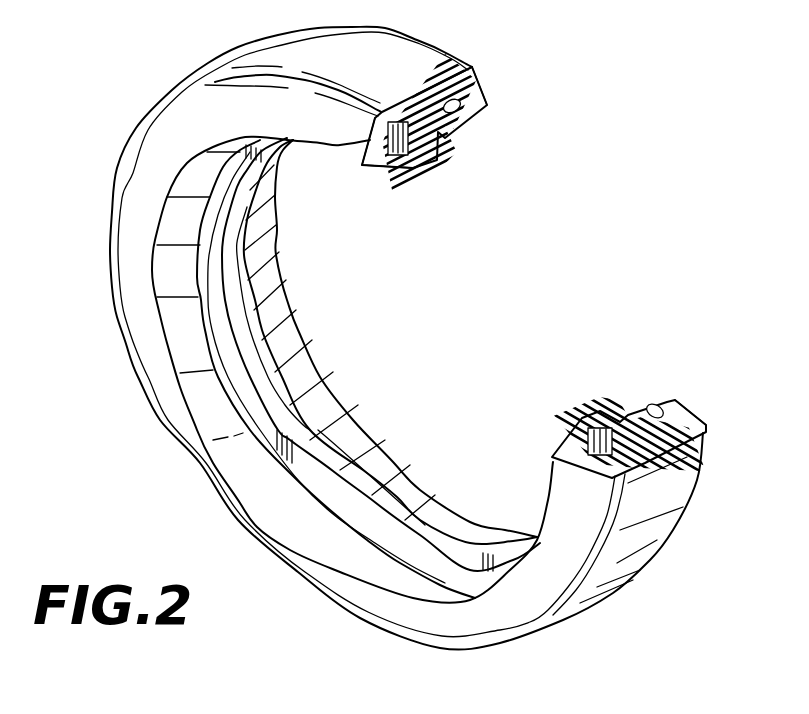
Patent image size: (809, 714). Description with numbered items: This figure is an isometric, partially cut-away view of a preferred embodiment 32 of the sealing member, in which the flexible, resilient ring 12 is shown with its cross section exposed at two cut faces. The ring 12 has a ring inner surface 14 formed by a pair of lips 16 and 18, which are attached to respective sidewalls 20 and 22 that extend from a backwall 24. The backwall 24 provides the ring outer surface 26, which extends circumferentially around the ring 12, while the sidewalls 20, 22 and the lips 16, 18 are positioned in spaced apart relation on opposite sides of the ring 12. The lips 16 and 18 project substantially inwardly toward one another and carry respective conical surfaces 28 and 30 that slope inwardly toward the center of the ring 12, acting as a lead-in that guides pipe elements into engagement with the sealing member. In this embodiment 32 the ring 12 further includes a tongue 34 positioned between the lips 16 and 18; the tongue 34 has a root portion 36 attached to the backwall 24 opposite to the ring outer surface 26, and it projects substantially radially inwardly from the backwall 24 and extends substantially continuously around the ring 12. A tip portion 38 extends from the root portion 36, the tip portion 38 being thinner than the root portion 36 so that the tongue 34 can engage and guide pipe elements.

The ring 12 is at (657, 537).
The ring inner surface 14 is at (310, 375).
The lip 16 is at (372, 165).
The lip 18 is at (460, 112).
The sidewall 20 is at (377, 143).
The sidewall 22 is at (487, 85).
The backwall 24 is at (420, 100).
The ring outer surface 26 is at (302, 63).
The conical surface 28 is at (243, 466).
The conical surface 30 is at (353, 440).
The preferred embodiment of the sealing member 32 is at (588, 255).
The tongue 34 is at (617, 427).
The root portion 36 is at (672, 410).
The tip portion 38 is at (237, 387).